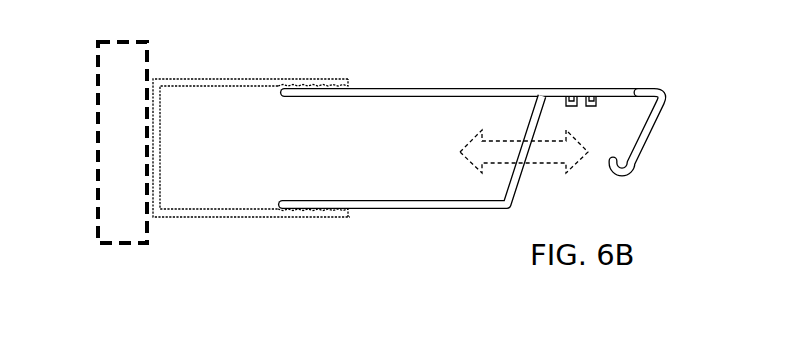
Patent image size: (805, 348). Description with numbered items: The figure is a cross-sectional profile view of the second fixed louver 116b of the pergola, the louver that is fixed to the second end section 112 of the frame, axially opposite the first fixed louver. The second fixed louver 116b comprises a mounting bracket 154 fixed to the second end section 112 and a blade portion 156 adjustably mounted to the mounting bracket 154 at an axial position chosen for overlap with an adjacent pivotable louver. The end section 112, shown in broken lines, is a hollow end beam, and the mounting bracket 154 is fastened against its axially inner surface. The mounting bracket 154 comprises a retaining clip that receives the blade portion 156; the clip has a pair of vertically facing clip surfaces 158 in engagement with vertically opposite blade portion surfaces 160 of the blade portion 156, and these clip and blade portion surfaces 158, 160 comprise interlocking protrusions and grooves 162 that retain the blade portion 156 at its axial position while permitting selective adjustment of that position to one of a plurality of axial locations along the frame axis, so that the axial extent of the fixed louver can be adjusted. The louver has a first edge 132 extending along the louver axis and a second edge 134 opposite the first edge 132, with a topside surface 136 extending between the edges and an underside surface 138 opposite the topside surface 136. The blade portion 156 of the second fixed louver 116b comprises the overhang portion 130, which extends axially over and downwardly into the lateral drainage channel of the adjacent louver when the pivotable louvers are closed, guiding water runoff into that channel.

The second end section 112 is at (121, 246).
The second fixed louver 116b is at (697, 43).
The overhang portion 130 is at (663, 97).
The first edge 132 is at (124, 82).
The second edge 134 is at (698, 100).
The topside surface 136 is at (402, 85).
The underside surface 138 is at (404, 212).
The mounting bracket 154 is at (214, 218).
The blade portion 156 is at (480, 215).
The clip surfaces 158 is at (292, 98).
The blade portion surfaces 160 is at (318, 80).
The interlocking protrusions and grooves 162 is at (274, 203).